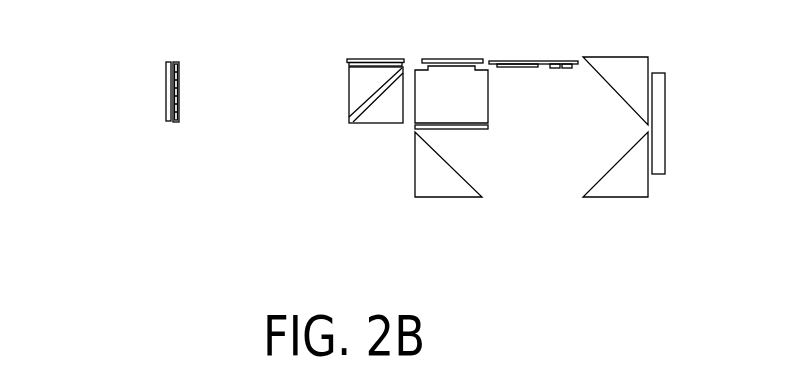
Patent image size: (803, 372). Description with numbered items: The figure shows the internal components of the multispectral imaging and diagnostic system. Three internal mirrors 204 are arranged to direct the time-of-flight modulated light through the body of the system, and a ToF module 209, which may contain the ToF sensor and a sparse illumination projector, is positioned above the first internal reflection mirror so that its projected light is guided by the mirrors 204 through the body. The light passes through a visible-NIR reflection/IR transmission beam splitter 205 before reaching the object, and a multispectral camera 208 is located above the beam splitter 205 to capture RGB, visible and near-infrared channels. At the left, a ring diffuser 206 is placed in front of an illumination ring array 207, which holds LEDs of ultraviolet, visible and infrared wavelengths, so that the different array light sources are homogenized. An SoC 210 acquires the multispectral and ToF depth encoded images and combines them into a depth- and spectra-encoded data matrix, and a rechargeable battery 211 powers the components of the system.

The internal mirrors 204 is at (615, 57).
The visible-NIR reflection/IR transmission beam splitter 205 is at (377, 124).
The ring diffuser 206 is at (166, 76).
The illumination ring array 207 is at (179, 108).
The multispectral camera 208 is at (352, 59).
The ToF module 209 is at (443, 60).
The SoC 210 is at (532, 61).
The rechargeable battery 211 is at (667, 131).